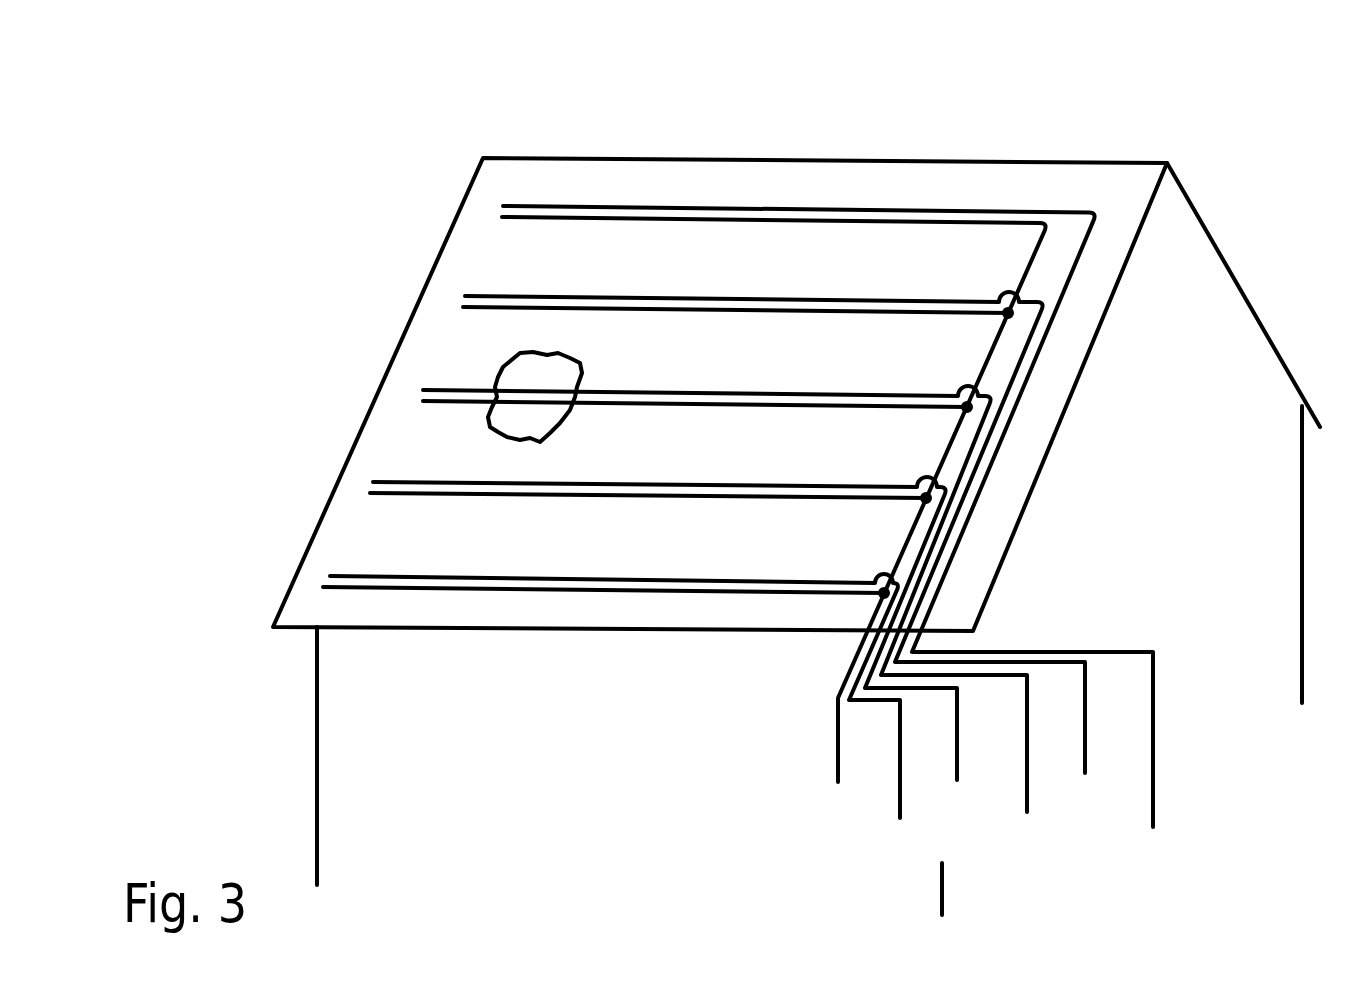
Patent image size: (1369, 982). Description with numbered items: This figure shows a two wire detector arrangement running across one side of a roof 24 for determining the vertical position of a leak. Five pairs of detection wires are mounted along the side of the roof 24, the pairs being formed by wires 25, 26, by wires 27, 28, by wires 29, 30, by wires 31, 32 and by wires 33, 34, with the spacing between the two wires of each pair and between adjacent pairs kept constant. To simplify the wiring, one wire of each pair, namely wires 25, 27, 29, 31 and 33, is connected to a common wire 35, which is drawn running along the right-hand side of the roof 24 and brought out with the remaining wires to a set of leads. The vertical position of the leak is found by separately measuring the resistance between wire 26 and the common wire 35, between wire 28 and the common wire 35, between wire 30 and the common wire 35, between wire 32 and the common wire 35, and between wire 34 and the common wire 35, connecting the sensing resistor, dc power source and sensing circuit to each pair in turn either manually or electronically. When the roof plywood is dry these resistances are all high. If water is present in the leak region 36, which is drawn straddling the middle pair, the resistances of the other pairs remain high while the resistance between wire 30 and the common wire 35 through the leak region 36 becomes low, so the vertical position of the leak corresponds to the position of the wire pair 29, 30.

The roof 24 is at (900, 183).
The detection wire 25 is at (313, 597).
The detection wire 26 is at (315, 578).
The detection wire 27 is at (360, 500).
The detection wire 28 is at (365, 485).
The detection wire 29 is at (412, 402).
The detection wire 30 is at (413, 388).
The detection wire 31 is at (452, 308).
The detection wire 32 is at (460, 293).
The detection wire 33 is at (495, 217).
The detection wire 34 is at (497, 200).
The common wire 35 is at (1023, 257).
The leak region 36 is at (592, 370).